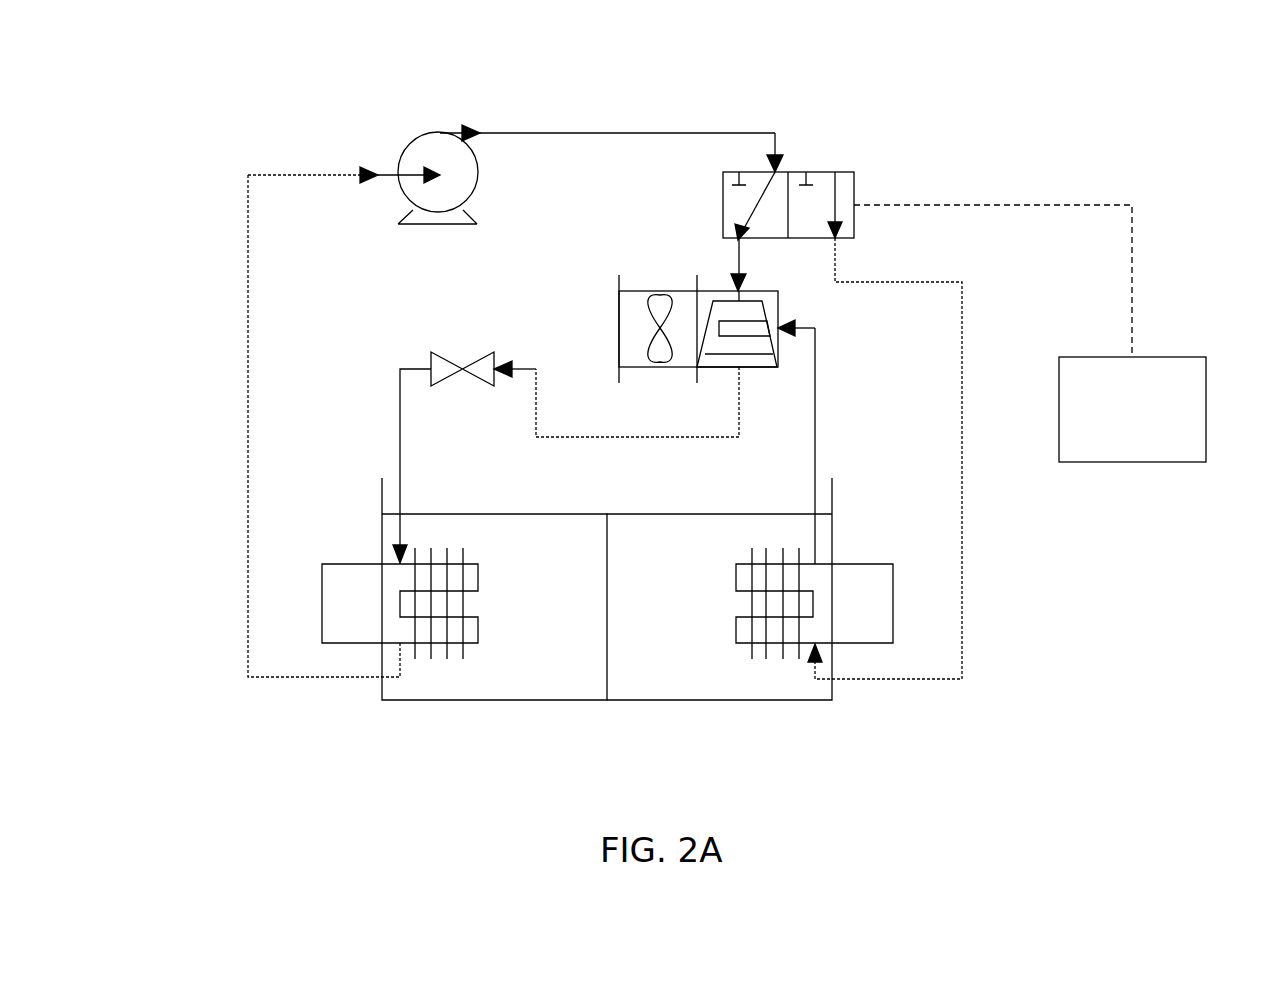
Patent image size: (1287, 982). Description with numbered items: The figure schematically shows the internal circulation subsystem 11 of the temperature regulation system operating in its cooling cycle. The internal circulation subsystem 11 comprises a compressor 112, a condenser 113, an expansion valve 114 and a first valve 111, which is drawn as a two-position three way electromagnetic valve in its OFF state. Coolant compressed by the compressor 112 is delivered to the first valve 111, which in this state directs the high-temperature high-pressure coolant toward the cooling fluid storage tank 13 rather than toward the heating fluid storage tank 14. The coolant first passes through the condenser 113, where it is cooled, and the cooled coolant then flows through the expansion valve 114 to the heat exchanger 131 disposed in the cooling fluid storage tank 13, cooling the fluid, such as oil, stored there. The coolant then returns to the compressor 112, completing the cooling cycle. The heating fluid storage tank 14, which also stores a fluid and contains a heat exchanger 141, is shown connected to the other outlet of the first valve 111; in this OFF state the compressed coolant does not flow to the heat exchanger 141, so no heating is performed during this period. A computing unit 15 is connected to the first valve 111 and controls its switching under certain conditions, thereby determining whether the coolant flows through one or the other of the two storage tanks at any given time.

The internal circulation subsystem 11 is at (1160, 112).
The first valve 111 is at (819, 172).
The compressor 112 is at (410, 150).
The condenser 113 is at (640, 291).
The expansion valve 114 is at (431, 360).
The cooling fluid storage tank 13 is at (555, 514).
The heat exchanger 131 is at (437, 563).
The heating fluid storage tank 14 is at (645, 514).
The heat exchanger 141 is at (773, 563).
The computing unit 15 is at (1175, 357).